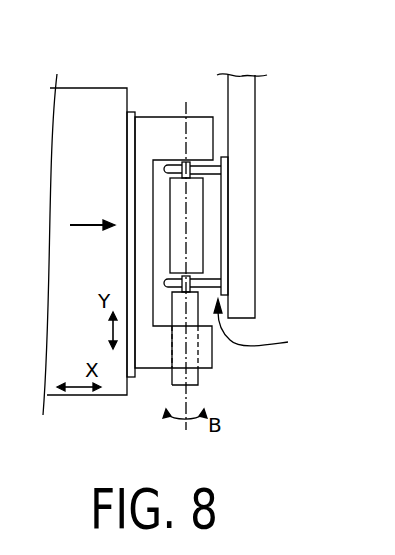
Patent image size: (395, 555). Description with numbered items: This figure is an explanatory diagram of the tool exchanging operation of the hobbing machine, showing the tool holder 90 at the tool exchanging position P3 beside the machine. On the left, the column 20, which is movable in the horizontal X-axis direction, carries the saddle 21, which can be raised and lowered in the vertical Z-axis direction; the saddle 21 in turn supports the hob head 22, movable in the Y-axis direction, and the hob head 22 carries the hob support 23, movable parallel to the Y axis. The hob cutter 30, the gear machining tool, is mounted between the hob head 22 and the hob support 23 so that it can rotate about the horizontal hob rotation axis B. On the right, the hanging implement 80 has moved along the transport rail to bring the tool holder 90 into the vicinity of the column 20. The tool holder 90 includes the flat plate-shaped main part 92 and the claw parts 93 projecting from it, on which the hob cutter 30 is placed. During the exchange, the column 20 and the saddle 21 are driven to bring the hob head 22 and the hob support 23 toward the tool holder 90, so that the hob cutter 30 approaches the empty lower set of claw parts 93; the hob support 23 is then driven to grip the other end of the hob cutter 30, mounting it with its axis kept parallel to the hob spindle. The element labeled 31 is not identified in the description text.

The column 20 is at (80, 88).
The saddle 21 is at (132, 112).
The hob head 22 is at (173, 117).
The hob support 23 is at (177, 385).
The hob cutter 30 is at (204, 237).
The bolt 31 is at (188, 162).
The hanging implement 80 is at (255, 105).
The tool holder 90 is at (286, 328).
The main part 92 is at (229, 215).
The claw parts 93 is at (215, 176).